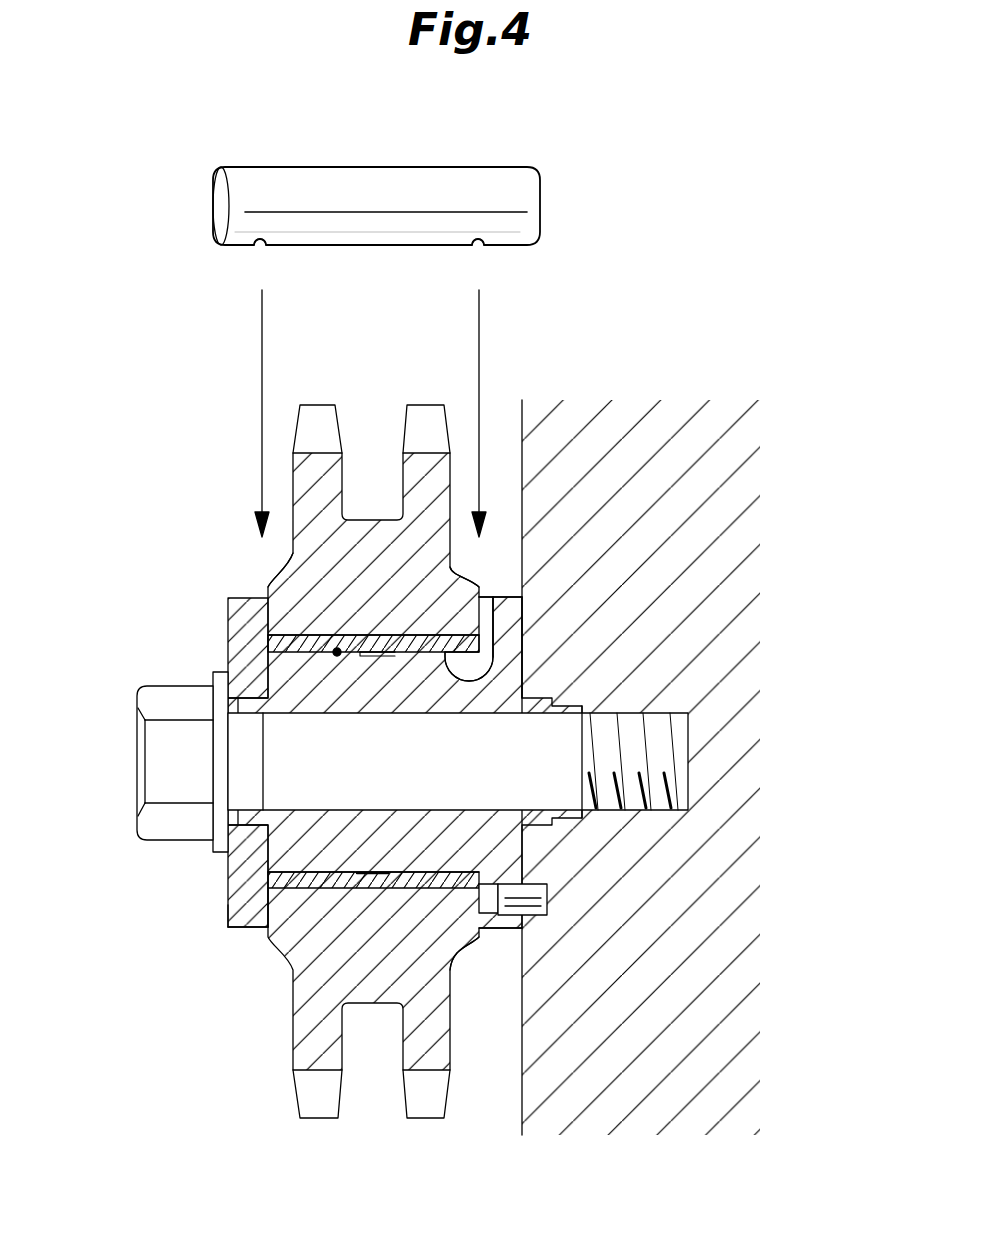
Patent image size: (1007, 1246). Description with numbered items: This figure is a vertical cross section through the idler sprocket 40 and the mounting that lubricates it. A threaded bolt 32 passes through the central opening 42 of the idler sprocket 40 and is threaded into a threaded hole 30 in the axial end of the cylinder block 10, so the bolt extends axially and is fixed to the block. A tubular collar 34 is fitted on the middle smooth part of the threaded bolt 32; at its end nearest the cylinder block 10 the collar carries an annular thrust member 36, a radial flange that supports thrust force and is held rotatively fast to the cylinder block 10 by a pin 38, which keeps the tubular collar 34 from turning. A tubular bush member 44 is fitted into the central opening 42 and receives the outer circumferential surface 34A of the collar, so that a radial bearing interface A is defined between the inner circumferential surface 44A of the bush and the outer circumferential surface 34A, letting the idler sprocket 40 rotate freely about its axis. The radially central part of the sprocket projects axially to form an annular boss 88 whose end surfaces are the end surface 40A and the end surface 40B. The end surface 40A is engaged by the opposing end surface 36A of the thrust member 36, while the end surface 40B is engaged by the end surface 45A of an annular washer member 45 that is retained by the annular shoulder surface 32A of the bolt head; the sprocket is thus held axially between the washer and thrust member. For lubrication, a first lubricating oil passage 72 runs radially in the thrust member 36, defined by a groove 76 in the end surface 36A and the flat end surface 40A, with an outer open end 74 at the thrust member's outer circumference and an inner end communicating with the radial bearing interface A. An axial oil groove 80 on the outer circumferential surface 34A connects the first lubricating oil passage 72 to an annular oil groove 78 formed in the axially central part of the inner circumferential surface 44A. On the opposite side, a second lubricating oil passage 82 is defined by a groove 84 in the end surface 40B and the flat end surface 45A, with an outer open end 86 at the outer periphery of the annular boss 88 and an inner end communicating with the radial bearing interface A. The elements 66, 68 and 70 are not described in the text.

The cylinder block 10 is at (580, 1103).
The threaded hole 30 is at (623, 718).
The threaded bolt 32 is at (247, 742).
The annular shoulder surface 32A is at (228, 672).
The tubular collar 34 is at (268, 587).
The outer circumferential surface 34A is at (302, 577).
The thrust member 36 is at (510, 632).
The end surface 36A is at (455, 940).
The pin 38 is at (535, 880).
The idler sprocket 40 is at (303, 472).
The end surface 40A is at (493, 927).
The end surface 40B is at (230, 613).
The central opening 42 is at (298, 1100).
The tubular bush member 44 is at (303, 647).
The inner circumferential surface 44A is at (463, 592).
The annular washer member 45 is at (222, 918).
The end surface 45A is at (262, 912).
The tube 66 is at (392, 195).
The notch 68 is at (479, 250).
The notch 70 is at (260, 250).
The first lubricating oil passage 72 is at (484, 650).
The outer open end 74 is at (505, 620).
The groove 76 is at (490, 603).
The annular oil groove 78 is at (350, 647).
The axial oil groove 80 is at (397, 633).
The second lubricating oil passage 82 is at (262, 905).
The groove 84 is at (232, 928).
The outer open end 86 is at (273, 890).
The annular boss 88 is at (300, 890).
The radial bearing interface A is at (337, 652).